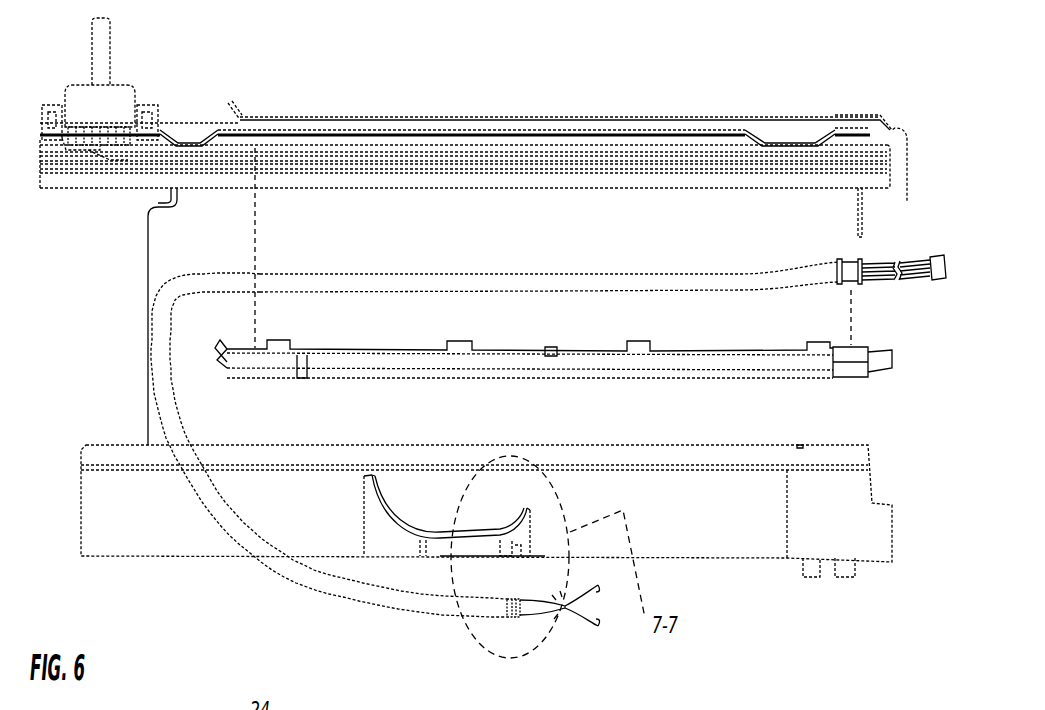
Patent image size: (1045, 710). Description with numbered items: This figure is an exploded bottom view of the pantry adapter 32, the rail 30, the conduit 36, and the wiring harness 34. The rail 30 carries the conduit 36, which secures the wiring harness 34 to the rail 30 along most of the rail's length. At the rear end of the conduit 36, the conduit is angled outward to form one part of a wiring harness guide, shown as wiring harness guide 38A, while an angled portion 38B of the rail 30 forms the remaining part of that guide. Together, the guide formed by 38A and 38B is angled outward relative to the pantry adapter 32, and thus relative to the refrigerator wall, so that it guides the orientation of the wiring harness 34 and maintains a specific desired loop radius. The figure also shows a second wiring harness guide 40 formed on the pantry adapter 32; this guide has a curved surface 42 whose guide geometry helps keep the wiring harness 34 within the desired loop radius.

The rail 30 is at (487, 113).
The pantry adapter 32 is at (717, 557).
The wiring harness 34 is at (495, 270).
The conduit 36 is at (741, 379).
The wiring harness guide 38A is at (222, 360).
The angled portion 38B is at (237, 101).
The second wiring harness guide 40 is at (413, 540).
The curved surface 42 is at (373, 505).